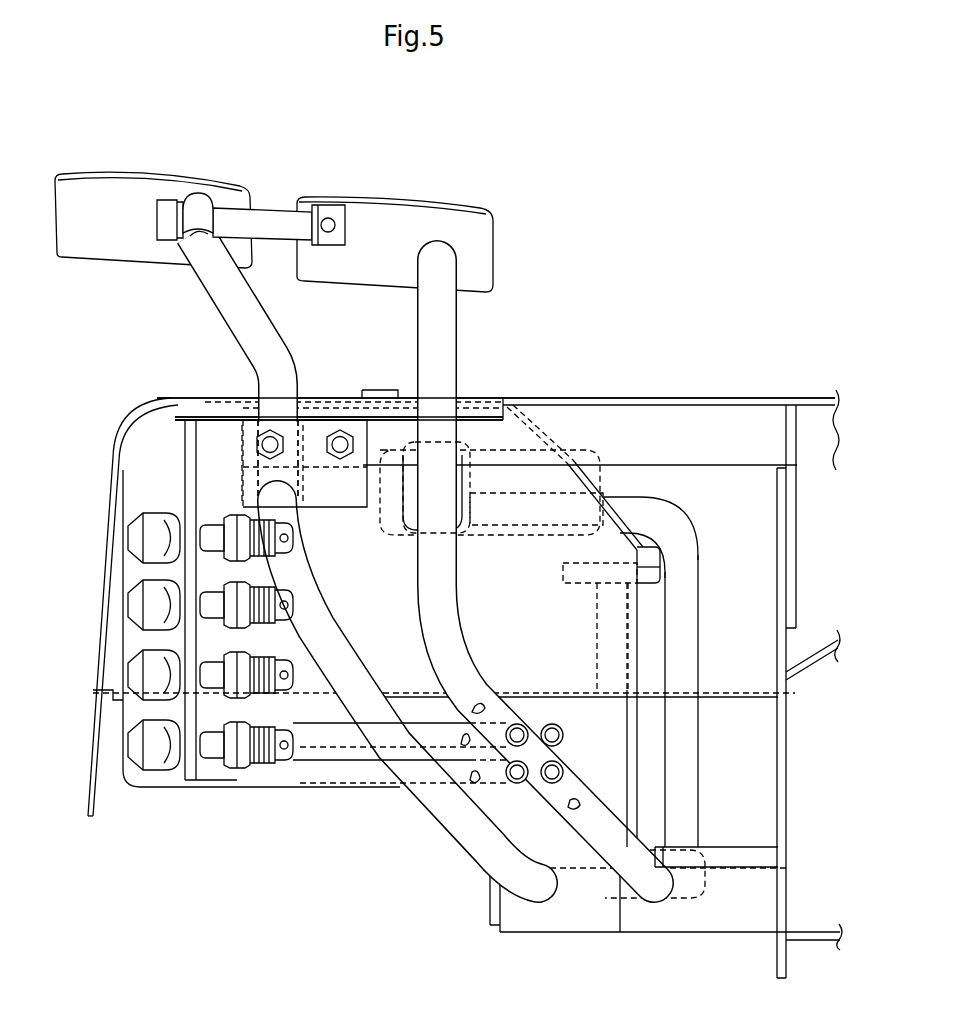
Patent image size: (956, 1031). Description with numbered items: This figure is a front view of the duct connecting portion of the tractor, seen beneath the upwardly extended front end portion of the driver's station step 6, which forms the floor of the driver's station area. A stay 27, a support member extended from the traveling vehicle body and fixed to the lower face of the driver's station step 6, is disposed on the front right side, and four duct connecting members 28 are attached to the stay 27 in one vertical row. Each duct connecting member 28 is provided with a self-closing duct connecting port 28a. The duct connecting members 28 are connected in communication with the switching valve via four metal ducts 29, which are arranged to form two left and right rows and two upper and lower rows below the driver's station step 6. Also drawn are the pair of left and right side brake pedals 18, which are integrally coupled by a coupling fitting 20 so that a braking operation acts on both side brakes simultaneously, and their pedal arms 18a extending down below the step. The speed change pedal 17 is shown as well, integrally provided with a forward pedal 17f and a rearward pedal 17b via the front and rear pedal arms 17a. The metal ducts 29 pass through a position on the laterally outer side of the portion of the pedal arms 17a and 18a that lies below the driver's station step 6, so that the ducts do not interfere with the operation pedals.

The driver's station step 6 is at (580, 697).
The speed change pedal 17 is at (652, 494).
The pedal arms 17a is at (622, 777).
The rearward pedal 17b is at (652, 552).
The forward pedal 17f is at (579, 451).
The side brake pedals 18 is at (133, 173).
The pedal arms 18a is at (457, 623).
The coupling fitting 20 is at (273, 206).
The stay 27 is at (195, 484).
The duct connecting members 28 is at (133, 606).
The self-closing duct connecting ports 28a is at (291, 600).
The metal ducts 29 is at (552, 724).